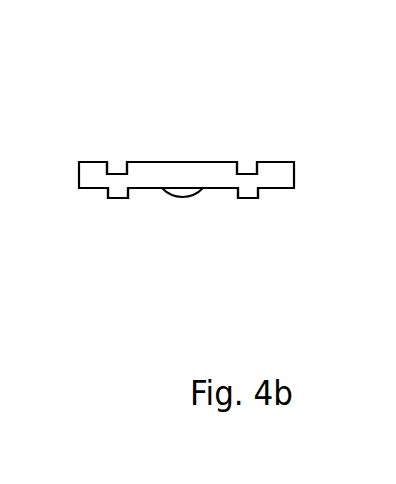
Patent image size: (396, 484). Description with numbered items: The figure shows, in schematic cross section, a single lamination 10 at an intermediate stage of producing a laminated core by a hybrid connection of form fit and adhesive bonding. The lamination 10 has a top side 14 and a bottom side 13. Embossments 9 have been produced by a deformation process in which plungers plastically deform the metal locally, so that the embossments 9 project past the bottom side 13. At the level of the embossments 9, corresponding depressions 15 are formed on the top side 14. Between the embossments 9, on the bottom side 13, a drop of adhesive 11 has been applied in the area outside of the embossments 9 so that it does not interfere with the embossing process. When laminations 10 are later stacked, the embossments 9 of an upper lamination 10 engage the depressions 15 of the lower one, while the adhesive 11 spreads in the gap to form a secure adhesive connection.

The embossments 9 is at (118, 192).
The lamination 10 is at (202, 183).
The adhesive 11 is at (187, 192).
The bottom side 13 is at (283, 188).
The top side 14 is at (168, 165).
The depressions 15 is at (115, 165).